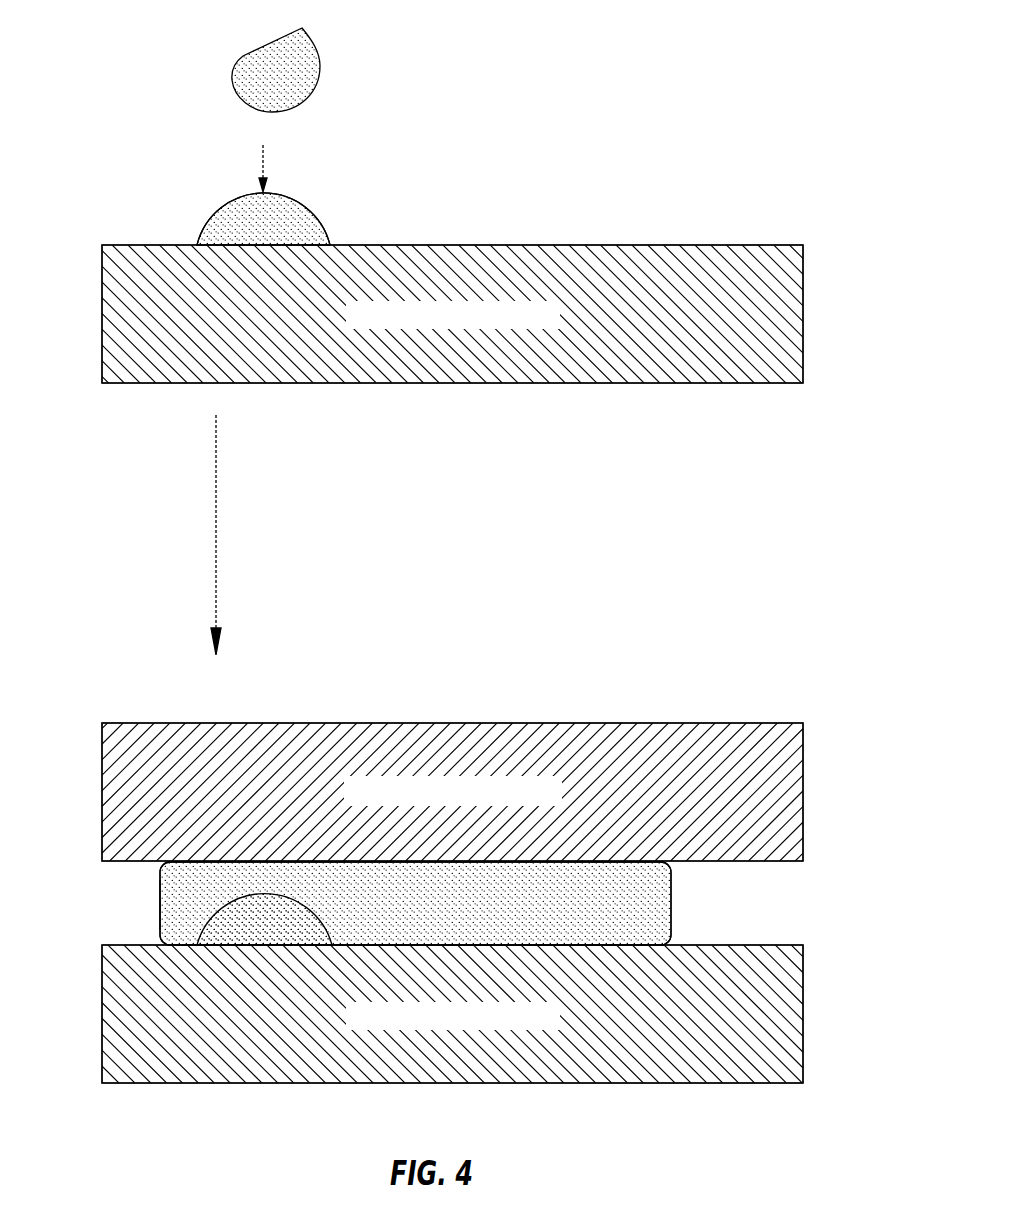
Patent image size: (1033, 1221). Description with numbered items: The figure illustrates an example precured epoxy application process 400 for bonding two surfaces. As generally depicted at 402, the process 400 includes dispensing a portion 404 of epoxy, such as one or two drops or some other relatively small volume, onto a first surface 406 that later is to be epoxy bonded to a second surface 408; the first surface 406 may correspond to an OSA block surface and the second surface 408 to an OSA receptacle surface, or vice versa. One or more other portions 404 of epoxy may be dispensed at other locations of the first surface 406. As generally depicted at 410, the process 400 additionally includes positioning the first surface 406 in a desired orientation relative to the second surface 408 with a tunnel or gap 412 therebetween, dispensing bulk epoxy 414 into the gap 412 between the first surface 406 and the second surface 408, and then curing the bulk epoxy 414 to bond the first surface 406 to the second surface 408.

The precured epoxy application process 400 is at (789, 39).
The dispensing stage 402 is at (789, 174).
The portion of epoxy 404 is at (331, 231).
The first surface 406 is at (462, 244).
The second surface 408 is at (797, 862).
The positioning and bulk epoxy dispensing stage 410 is at (790, 617).
The gap 412 is at (105, 905).
The bulk epoxy 414 is at (672, 903).